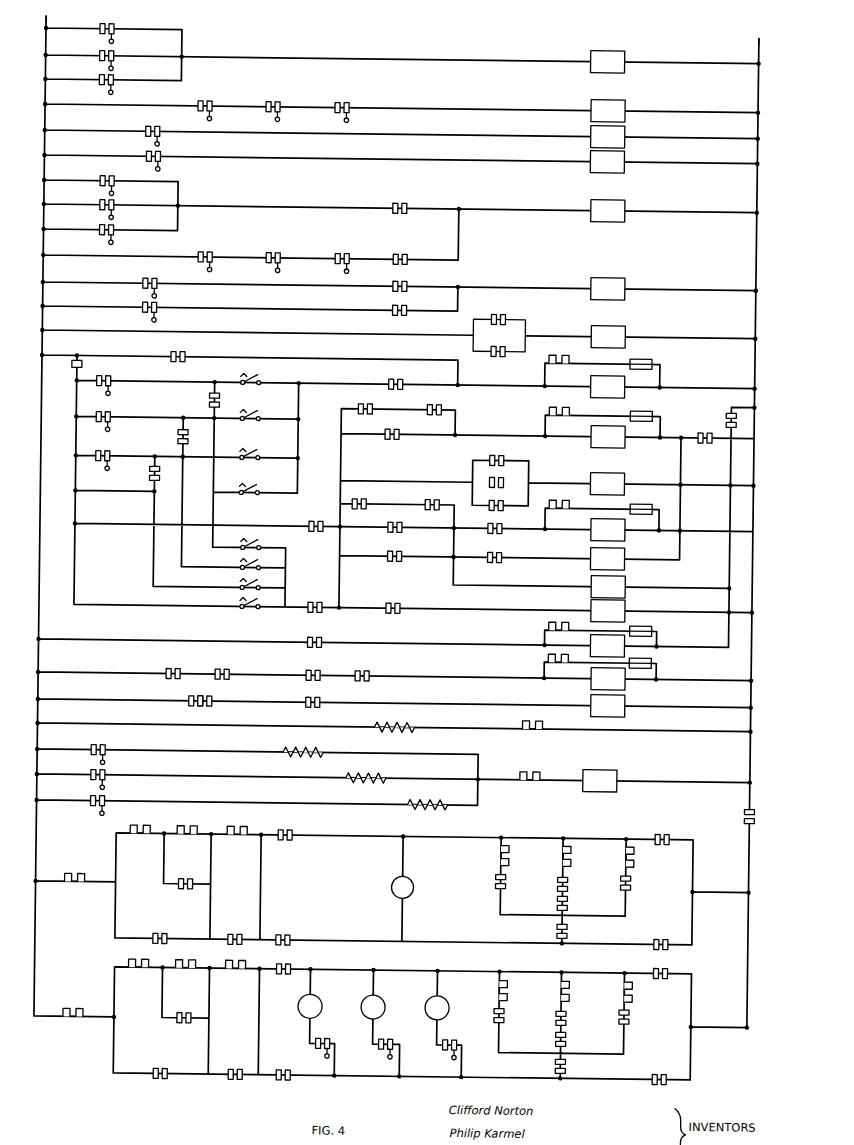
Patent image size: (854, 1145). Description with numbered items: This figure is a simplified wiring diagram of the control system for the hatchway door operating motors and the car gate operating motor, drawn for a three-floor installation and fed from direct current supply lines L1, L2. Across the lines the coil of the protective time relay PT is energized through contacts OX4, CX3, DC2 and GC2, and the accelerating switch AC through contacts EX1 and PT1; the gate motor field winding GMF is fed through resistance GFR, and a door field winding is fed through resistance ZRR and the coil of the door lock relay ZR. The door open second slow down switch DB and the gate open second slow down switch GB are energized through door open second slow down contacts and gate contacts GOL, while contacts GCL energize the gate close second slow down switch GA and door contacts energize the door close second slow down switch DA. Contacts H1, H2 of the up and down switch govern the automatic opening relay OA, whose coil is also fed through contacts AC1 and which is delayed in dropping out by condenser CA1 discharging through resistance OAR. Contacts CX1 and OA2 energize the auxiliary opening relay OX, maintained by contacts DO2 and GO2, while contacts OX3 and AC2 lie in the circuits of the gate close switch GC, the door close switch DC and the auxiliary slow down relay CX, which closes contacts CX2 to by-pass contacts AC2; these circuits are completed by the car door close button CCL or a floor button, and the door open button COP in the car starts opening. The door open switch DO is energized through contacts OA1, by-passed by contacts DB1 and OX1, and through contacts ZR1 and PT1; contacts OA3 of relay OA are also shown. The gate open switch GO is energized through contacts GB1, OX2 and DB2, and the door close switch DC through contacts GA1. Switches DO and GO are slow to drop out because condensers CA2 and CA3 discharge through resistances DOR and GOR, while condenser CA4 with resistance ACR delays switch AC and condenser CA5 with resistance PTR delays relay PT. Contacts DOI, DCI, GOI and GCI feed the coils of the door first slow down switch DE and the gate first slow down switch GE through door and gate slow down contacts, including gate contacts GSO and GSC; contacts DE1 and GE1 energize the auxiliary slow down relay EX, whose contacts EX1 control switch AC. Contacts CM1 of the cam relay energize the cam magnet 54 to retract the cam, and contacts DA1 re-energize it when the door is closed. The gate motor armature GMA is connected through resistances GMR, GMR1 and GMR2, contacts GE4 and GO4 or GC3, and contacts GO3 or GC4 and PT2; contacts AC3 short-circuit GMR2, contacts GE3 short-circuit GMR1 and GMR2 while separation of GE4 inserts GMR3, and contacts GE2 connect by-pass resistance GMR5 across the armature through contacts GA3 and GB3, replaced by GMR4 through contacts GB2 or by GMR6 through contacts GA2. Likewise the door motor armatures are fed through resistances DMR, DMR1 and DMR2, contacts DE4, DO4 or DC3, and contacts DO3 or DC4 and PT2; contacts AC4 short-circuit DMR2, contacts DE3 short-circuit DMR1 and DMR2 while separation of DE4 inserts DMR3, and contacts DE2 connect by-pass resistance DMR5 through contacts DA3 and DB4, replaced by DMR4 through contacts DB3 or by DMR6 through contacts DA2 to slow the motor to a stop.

The direct current supply line L1 is at (43, 24).
The direct current supply line L2 is at (759, 36).
The door close second slow down switch DA is at (607, 62).
The door open second slow down switch DB is at (608, 111).
The gate open second slow down contacts GOL is at (148, 126).
The gate open second slow down switch GB is at (608, 137).
The gate close second slow down contacts GCL is at (149, 151).
The gate close second slow down switch GA is at (607, 162).
The door close switch contacts DC1 DCI is at (406, 200).
The door first slow down switch DE is at (608, 211).
The door open switch contacts DO1 DOI is at (410, 245).
The gate open first slow down contacts GSO is at (147, 278).
The gate open switch contacts GO1 GOI is at (402, 278).
The gate first slow down switch GE is at (608, 289).
The gate close first slow down contacts GSC is at (147, 302).
The gate close switch contacts GC1 GCI is at (402, 303).
The gate first slow down switch contacts GE1 is at (499, 338).
The door first slow down switch contacts DE1 is at (508, 305).
The auxiliary slow down relay EX is at (608, 337).
The up and down switch contacts H1 is at (180, 349).
The up and down switch contacts H2 is at (76, 364).
The accelerating switch contacts AC1 is at (396, 374).
The automatic opening relay OA is at (608, 387).
The door open button in the car COP is at (257, 483).
The auxiliary slow down relay contacts CX1 is at (322, 518).
The door close button in the car CCL is at (249, 609).
The auxiliary opening relay contacts OX3 is at (313, 600).
The accelerating switch contacts AC2 is at (400, 601).
The door open second slow down switch contacts DB1 is at (366, 403).
The auxiliary opening relay contacts OX1 is at (446, 397).
The automatic opening relay contacts OA1 is at (400, 425).
The door open switch DO is at (608, 437).
The gate open second slow down switch contacts GB1 is at (368, 495).
The auxiliary opening relay contacts OX2 is at (436, 495).
The relay contact OA3 is at (408, 515).
The auxiliary slow down relay contacts CX2 is at (393, 547).
The door open switch contacts DO2 is at (509, 447).
The gate open switch contacts GO2 is at (509, 469).
The automatic opening relay contacts OA2 is at (509, 492).
The auxiliary opening relay OX is at (607, 484).
The door open second slow down switch contacts DB2 is at (508, 515).
The gate open switch GO is at (608, 530).
The gate close second slow down switch contacts GA1 is at (508, 544).
The door close switch DC is at (607, 559).
The gate close switch GC is at (608, 587).
The auxiliary slow down relay CX is at (608, 611).
The resistance OAR is at (554, 354).
The condenser CA1 is at (653, 352).
The resistance DOR is at (548, 405).
The condenser CA2 is at (660, 401).
The door lock relay contacts ZR1 is at (704, 425).
The protective time relay contacts PT1 is at (729, 412).
The resistance GOR is at (548, 498).
The condenser CA3 is at (655, 497).
The resistance ACR is at (552, 621).
The condenser CA4 is at (659, 624).
The accelerating switch AC is at (607, 646).
The auxiliary slow down relay contacts EX1 is at (325, 634).
The resistance PTR is at (552, 654).
The condenser CA5 is at (659, 656).
The protective time relay PT is at (608, 679).
The auxiliary opening relay contacts OX4 is at (165, 665).
The auxiliary slow down relay contacts CX3 is at (215, 666).
The door close switch contacts DC2 is at (305, 667).
The gate close switch contacts GC2 is at (359, 668).
The cam relay contacts CM1 is at (196, 693).
The door close second slow down switch contacts DA1 is at (318, 695).
The cam magnet 54 is at (608, 706).
The gate operating motor field winding GMF is at (385, 719).
The resistance GFR is at (527, 717).
The resistance ZRR is at (535, 768).
The door lock relay ZR is at (600, 781).
The protective time relay contacts PT2 is at (752, 809).
The gate motor resistance GMR is at (70, 870).
The gate motor resistance GMR1 is at (130, 822).
The gate motor resistance GMR2 is at (178, 822).
The gate motor resistance GMR3 is at (227, 823).
The gate close switch contacts GC3 is at (282, 827).
The accelerating switch contacts AC3 is at (185, 876).
The gate first slow down switch contacts GE3 is at (158, 930).
The gate first slow down switch contacts GE4 is at (237, 931).
The gate open switch contacts GO4 is at (290, 932).
The gate operating motor armature GMA is at (421, 876).
The gate motor by-pass resistance GMR4 is at (505, 853).
The gate open second slow down switch contacts GB2 is at (505, 877).
The gate motor by-pass resistance GMR5 is at (567, 853).
The gate close second slow down switch contacts GA3 is at (578, 885).
The gate open second slow down switch contacts GB3 is at (566, 900).
The gate motor by-pass resistance GMR6 is at (630, 853).
The gate close second slow down switch contacts GA2 is at (642, 877).
The gate first slow down switch contacts GE2 is at (579, 926).
The gate open switch contacts GO3 is at (670, 826).
The gate close switch contacts GC4 is at (653, 937).
The door motor resistance DMR is at (68, 1005).
The door motor resistance DMR1 is at (129, 957).
The door motor resistance DMR2 is at (177, 957).
The door motor resistance DMR3 is at (228, 958).
The door close switch contacts DC3 is at (301, 955).
The accelerating switch contacts AC4 is at (185, 1010).
The door first slow down switch contacts DE3 is at (157, 1065).
The door first slow down switch contacts DE4 is at (225, 1066).
The door open switch contacts DO4 is at (273, 1067).
The door motor by-pass resistance DMR4 is at (519, 993).
The door open second slow down switch contacts DB3 is at (505, 1011).
The door motor by-pass resistance DMR5 is at (581, 993).
The door close second slow down switch contacts DA3 is at (578, 1018).
The door open second slow down switch contacts DB4 is at (566, 1036).
The door motor by-pass resistance DMR6 is at (645, 994).
The door close second slow down switch contacts DA2 is at (642, 1011).
The door first slow down switch contacts DE2 is at (579, 1061).
The door open switch contacts DO3 is at (666, 960).
The door close switch contacts DC4 is at (672, 1061).